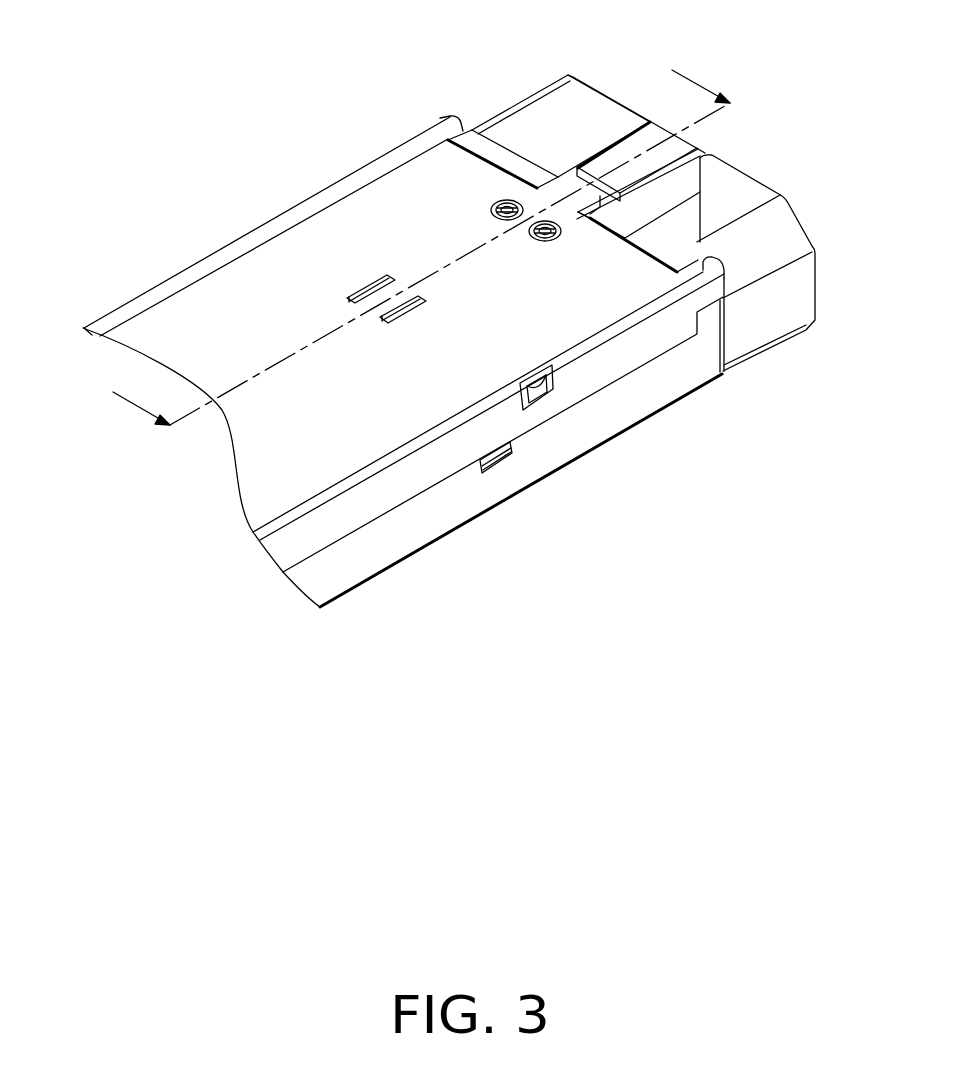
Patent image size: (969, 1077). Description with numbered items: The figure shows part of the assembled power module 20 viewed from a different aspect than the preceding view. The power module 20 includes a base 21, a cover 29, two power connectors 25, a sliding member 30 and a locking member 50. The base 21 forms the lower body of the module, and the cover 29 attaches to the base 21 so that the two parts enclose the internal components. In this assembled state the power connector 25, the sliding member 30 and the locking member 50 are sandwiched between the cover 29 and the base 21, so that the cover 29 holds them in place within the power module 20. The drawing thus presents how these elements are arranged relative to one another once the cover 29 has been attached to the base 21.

The power module 20 is at (197, 232).
The base 21 is at (628, 398).
The power connector 25 is at (523, 120).
The cover 29 is at (368, 412).
The sliding member 30 is at (628, 150).
The locking member 50 is at (362, 293).